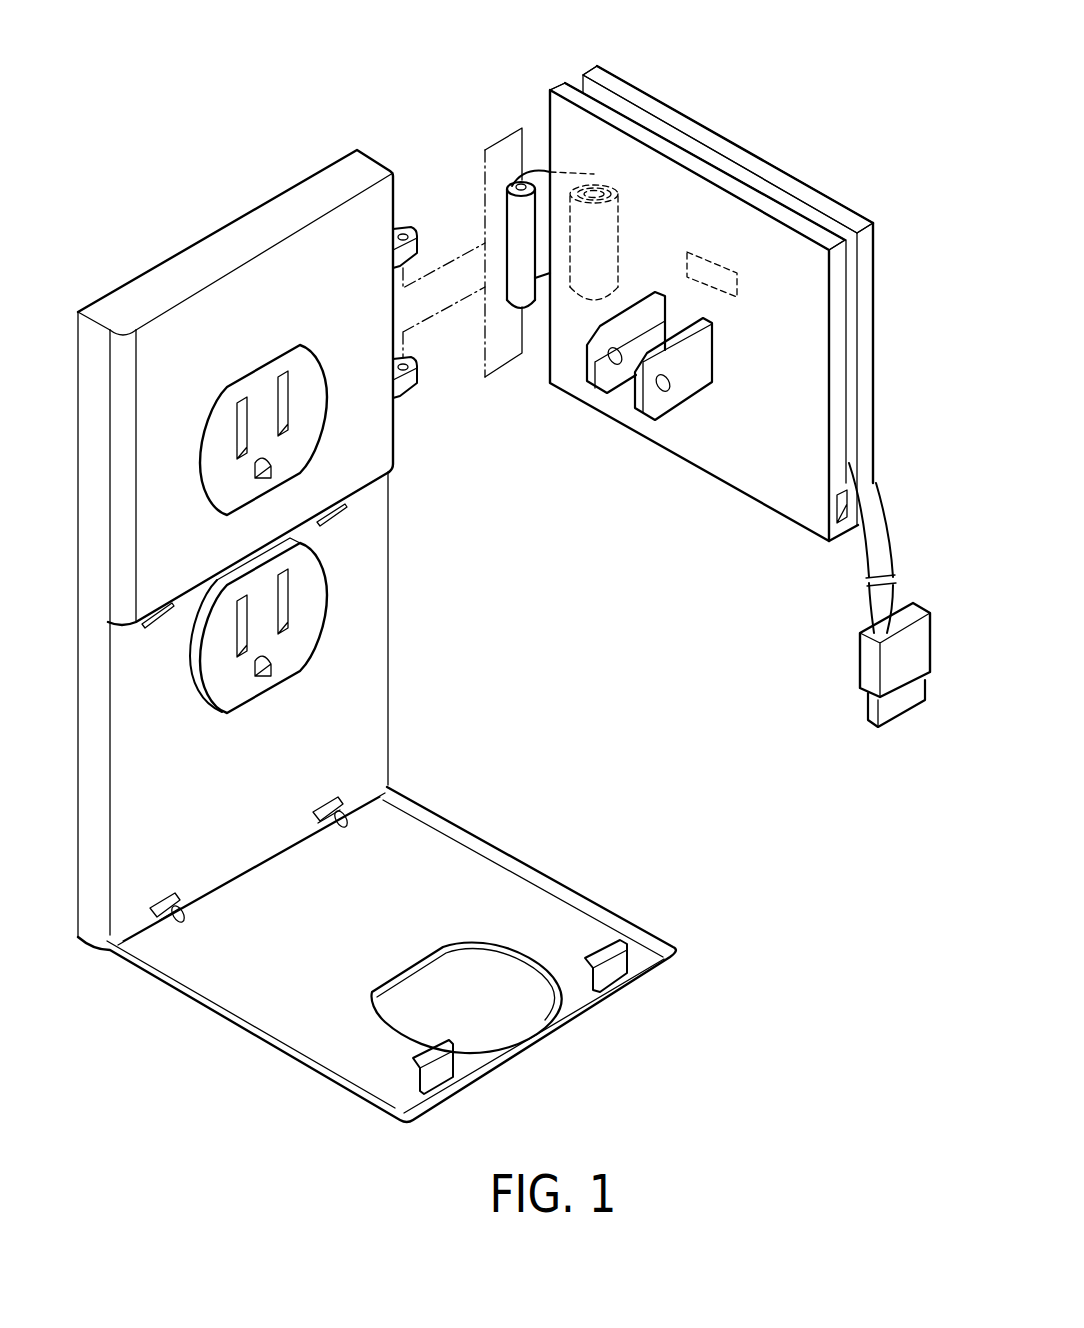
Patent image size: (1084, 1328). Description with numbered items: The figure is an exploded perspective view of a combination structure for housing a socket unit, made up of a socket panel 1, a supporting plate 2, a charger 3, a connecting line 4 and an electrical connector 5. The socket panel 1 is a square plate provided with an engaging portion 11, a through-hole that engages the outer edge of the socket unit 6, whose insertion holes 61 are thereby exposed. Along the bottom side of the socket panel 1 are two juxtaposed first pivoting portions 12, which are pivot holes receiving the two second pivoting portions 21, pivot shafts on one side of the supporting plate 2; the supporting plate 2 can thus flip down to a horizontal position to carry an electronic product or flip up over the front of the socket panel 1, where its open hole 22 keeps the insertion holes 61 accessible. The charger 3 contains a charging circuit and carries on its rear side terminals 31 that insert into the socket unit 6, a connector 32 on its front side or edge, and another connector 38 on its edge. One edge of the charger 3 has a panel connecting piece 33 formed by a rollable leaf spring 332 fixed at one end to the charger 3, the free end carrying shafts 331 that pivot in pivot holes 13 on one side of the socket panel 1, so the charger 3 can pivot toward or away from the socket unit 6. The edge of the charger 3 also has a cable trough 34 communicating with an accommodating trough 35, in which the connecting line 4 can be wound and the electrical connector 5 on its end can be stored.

The socket panel 1 is at (166, 251).
The engaging portion 11 is at (262, 370).
The first pivoting portions 12 is at (164, 900).
The pivot holes 13 is at (404, 227).
The supporting plate 2 is at (652, 928).
The second pivoting portions 21 is at (190, 917).
The open hole 22 is at (523, 950).
The charger 3 is at (862, 213).
The terminals 31 is at (657, 418).
The connector 32 is at (713, 266).
The panel connecting piece 33 is at (516, 211).
The shafts 331 is at (537, 171).
The leaf spring 332 is at (546, 278).
The cable trough 34 is at (802, 211).
The accommodating trough 35 is at (620, 110).
The connector 38 is at (838, 508).
The connecting line 4 is at (858, 600).
The electrical connector 5 is at (852, 666).
The socket unit 6 is at (212, 420).
The insertion holes 61 is at (292, 386).